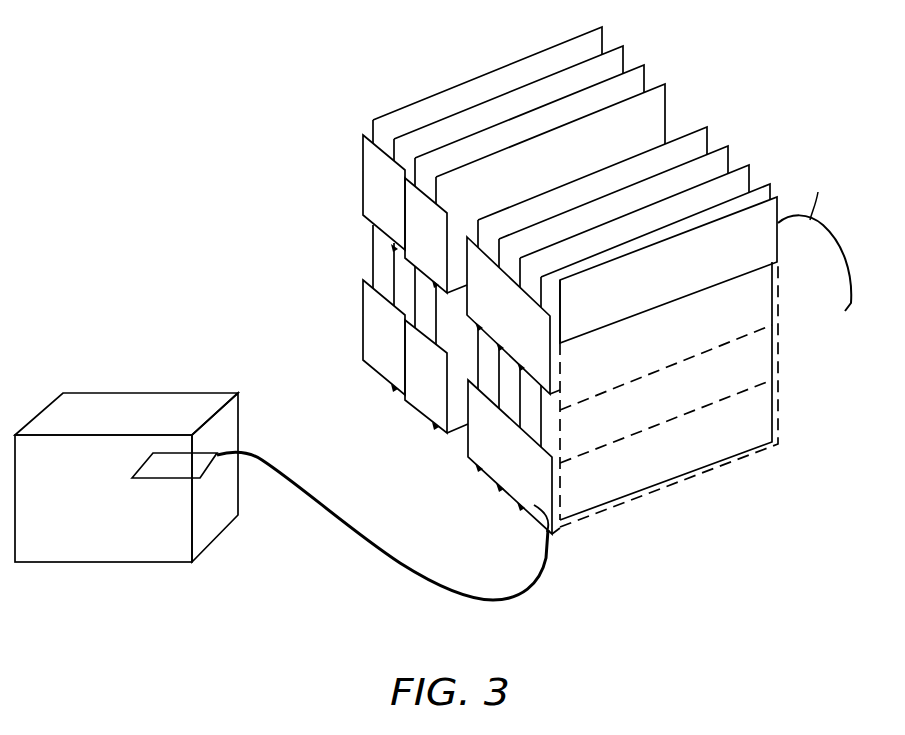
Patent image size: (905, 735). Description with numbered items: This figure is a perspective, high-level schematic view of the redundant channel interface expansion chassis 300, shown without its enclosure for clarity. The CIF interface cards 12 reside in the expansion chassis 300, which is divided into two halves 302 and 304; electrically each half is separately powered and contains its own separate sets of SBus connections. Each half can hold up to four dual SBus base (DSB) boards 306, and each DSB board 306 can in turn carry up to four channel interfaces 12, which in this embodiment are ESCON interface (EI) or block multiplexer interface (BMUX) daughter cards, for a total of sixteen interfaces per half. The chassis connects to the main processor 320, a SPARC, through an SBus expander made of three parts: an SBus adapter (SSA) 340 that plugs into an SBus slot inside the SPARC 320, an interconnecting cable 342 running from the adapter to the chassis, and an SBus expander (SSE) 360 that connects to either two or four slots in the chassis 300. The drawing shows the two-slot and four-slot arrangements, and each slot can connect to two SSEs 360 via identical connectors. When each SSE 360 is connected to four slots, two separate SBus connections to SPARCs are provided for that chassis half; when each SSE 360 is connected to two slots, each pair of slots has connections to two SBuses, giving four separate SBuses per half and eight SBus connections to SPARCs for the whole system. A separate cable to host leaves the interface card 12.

The expansion chassis 300 is at (780, 104).
The chassis half 302 is at (347, 259).
The chassis half 304 is at (448, 458).
The dual SBus base (DSB) board 306 is at (618, 148).
The channel interface card 12 is at (757, 250).
The main processor 320 is at (115, 533).
The SBus adapter (SSA) 340 is at (210, 452).
The interconnecting cable 342 is at (405, 570).
The SBus expander (SSE) 360 is at (533, 507).